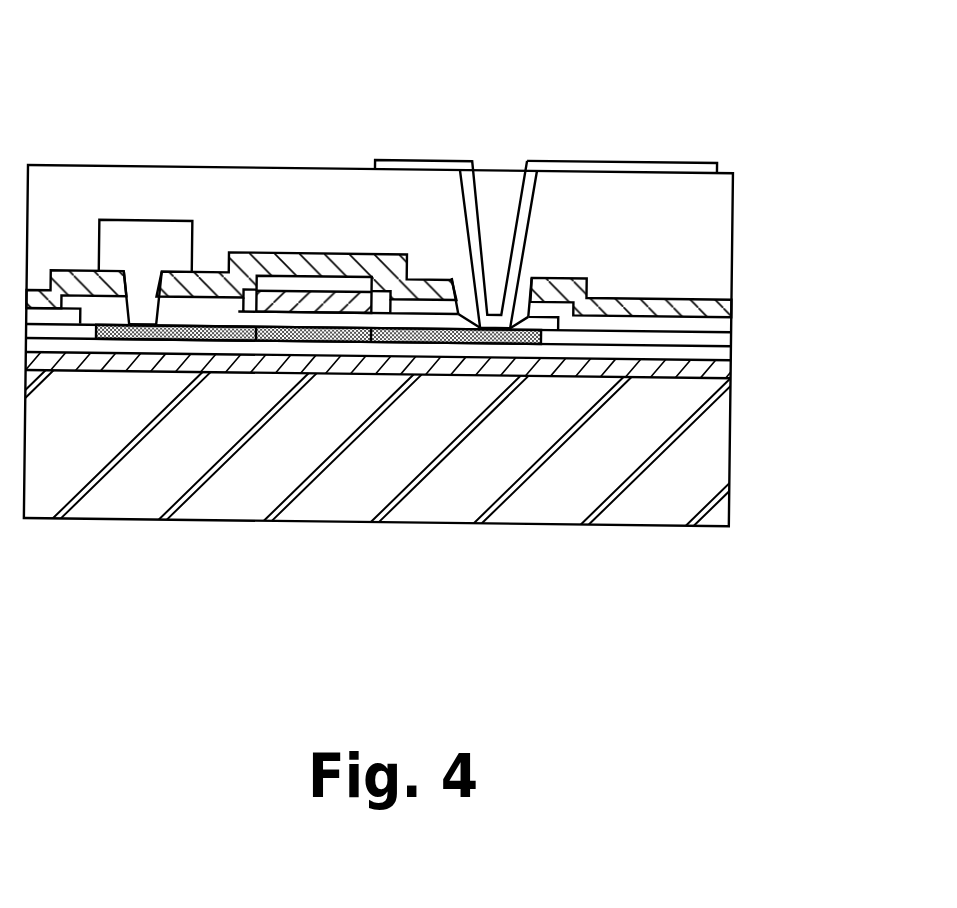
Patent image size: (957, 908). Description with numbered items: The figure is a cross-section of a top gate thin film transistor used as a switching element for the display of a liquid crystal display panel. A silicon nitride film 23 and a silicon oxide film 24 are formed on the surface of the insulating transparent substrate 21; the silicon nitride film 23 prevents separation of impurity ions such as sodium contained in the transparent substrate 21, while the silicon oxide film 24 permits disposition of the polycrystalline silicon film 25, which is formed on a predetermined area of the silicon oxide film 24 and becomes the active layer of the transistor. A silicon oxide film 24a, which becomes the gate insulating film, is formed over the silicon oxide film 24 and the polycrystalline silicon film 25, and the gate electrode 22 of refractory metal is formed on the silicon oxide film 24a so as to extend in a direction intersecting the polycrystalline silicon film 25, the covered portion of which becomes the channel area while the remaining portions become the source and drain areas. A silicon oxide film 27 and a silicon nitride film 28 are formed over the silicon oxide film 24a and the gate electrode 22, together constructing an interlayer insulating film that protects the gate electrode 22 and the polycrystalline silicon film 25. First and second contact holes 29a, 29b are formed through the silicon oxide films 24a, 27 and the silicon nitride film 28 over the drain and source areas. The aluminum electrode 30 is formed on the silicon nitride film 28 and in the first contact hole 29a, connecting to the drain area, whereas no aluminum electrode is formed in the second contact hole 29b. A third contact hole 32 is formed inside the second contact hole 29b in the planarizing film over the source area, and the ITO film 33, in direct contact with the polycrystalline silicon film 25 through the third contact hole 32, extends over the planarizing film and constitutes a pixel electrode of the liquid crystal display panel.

The insulating transparent substrate 21 is at (712, 507).
The gate electrode 22 is at (296, 308).
The silicon nitride film 23 is at (733, 376).
The silicon oxide film 24 is at (733, 360).
The silicon oxide film 24a is at (733, 344).
The polycrystalline silicon film 25 is at (362, 338).
The silicon oxide film 27 is at (733, 331).
The silicon nitride film 28 is at (733, 306).
The first contact hole 29a is at (140, 290).
The second contact hole 29b is at (456, 292).
The aluminum electrode 30 is at (180, 218).
The third contact hole 32 is at (533, 210).
The ITO film 33 is at (690, 163).